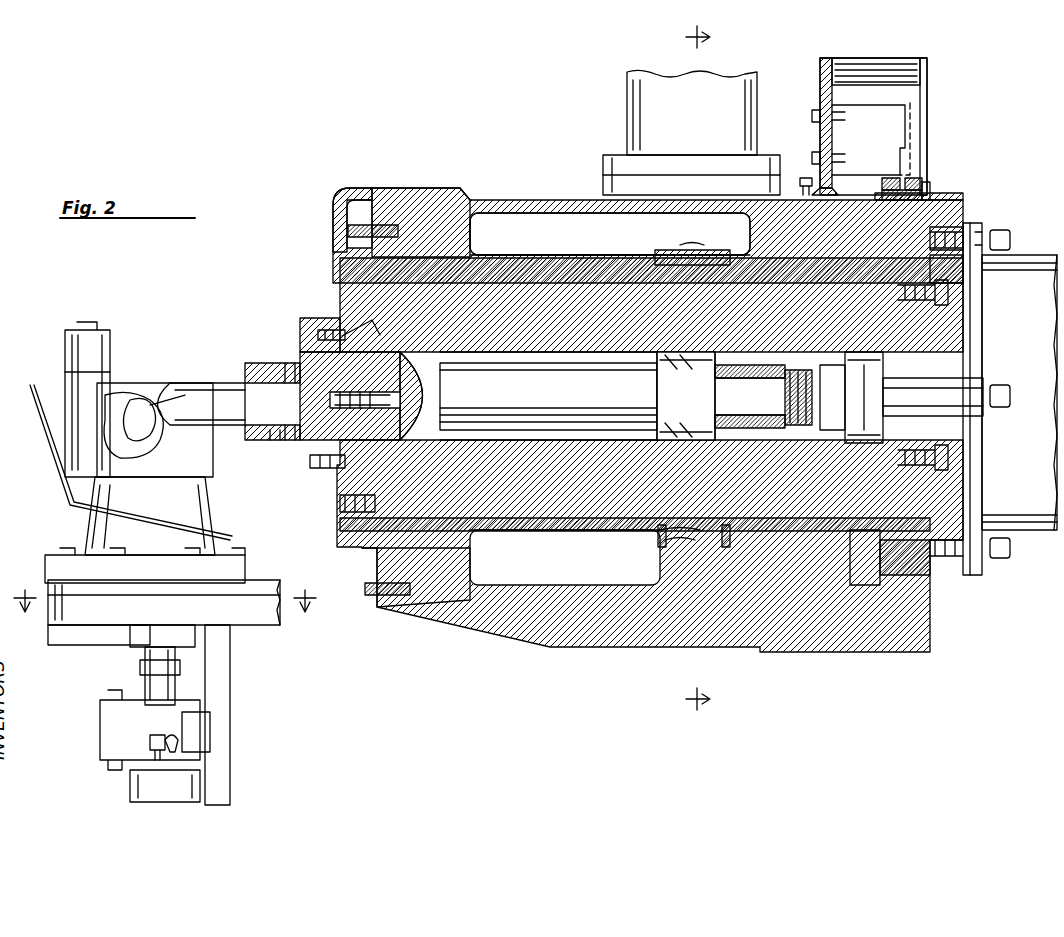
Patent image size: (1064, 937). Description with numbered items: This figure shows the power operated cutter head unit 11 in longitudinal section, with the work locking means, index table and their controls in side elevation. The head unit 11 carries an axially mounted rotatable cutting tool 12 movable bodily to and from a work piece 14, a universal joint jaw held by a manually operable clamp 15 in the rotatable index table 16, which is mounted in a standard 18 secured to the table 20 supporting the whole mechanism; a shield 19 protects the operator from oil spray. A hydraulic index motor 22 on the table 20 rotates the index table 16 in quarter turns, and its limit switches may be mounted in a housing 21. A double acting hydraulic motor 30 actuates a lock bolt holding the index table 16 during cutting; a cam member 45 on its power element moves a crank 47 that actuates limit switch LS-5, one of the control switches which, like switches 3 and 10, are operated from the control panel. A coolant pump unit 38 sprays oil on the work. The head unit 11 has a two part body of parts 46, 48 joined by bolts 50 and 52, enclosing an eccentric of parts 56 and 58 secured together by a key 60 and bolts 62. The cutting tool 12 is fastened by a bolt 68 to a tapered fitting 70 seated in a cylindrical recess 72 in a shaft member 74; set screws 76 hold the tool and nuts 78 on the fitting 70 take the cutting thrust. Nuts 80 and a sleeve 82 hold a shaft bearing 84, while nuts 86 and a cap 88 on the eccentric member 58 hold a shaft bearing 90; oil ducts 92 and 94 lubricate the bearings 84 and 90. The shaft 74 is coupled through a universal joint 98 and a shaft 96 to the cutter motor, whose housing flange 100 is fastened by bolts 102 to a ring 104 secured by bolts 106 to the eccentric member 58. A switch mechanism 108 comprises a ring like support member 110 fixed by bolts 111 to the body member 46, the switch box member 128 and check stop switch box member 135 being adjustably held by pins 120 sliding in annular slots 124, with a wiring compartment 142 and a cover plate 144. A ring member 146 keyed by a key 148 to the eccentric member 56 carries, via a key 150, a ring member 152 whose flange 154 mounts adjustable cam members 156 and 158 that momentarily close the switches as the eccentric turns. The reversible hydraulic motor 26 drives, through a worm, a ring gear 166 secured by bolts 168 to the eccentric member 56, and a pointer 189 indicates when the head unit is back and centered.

The control switch 10 is at (166, 610).
The power operated cutter head unit 11 is at (451, 177).
The rotatable cutting tool 12 is at (200, 390).
The work piece 14 is at (125, 395).
The manually operable clamp 15 is at (80, 382).
The index table 16 is at (170, 478).
The standard 18 is at (228, 573).
The shield 19 is at (50, 445).
The table 20 is at (272, 625).
The housing 21 is at (178, 612).
The pressure differential operated motor 22 is at (110, 718).
The hydraulically operated reversible motor 26 is at (640, 118).
The double acting motor 30 is at (155, 685).
The coolant pump unit 38 is at (200, 787).
The cam member 45 is at (152, 745).
The body member part 46 is at (505, 200).
The crank 47 is at (180, 745).
The body member part 48 is at (440, 205).
The bolts 50 is at (935, 205).
The bolts 52 is at (348, 230).
The eccentric member 56 is at (580, 265).
The eccentric member 58 is at (340, 272).
The key 60 is at (497, 258).
The bolts 62 is at (345, 512).
The bolt 68 is at (400, 400).
The tapered fitting 70 is at (300, 440).
The cylindrically shaped recess 72 is at (262, 438).
The shaft member 74 is at (596, 396).
The set screws 76 is at (278, 440).
The nuts 78 is at (260, 365).
The nuts 80 is at (792, 378).
The sleeve 82 is at (759, 402).
The shaft bearing 84 is at (696, 402).
The nuts 86 is at (460, 364).
The cap 88 is at (310, 320).
The shaft bearing 90 is at (330, 470).
The oil duct 92 is at (705, 262).
The oil duct 94 is at (345, 330).
The shaft 96 is at (945, 400).
The universal joint 98 is at (870, 368).
The flange 100 is at (982, 430).
The bolts 102 is at (1008, 240).
The ring 104 is at (945, 495).
The bolts 106 is at (950, 292).
The switch mechanism 108 is at (940, 68).
The ring like support member 110 is at (822, 60).
The bolts 111 is at (806, 178).
The pins 120 is at (812, 155).
The annular slots 124 is at (809, 110).
The switch box member 128 is at (928, 128).
The switch box member 135 is at (895, 118).
The compartment 142 is at (870, 70).
The cover plate 144 is at (928, 92).
The ring member 146 is at (915, 570).
The key 148 is at (965, 272).
The key 150 is at (955, 215).
The ring member 152 is at (898, 575).
The flange 154 is at (885, 195).
The cam member 156 is at (928, 190).
The cam member 158 is at (888, 178).
The ring gear 166 is at (690, 560).
The bolts 168 is at (660, 548).
The pointer 189 is at (333, 210).
The limit switch LS-5 is at (210, 722).
The control switch 3 is at (702, 372).